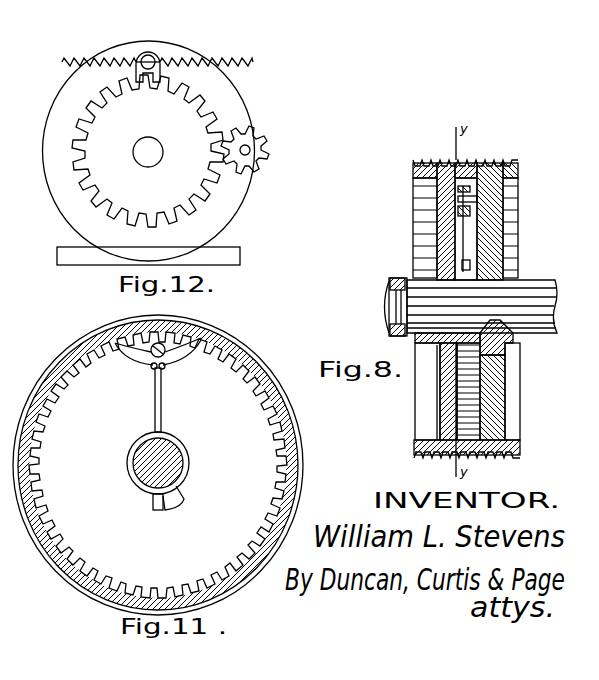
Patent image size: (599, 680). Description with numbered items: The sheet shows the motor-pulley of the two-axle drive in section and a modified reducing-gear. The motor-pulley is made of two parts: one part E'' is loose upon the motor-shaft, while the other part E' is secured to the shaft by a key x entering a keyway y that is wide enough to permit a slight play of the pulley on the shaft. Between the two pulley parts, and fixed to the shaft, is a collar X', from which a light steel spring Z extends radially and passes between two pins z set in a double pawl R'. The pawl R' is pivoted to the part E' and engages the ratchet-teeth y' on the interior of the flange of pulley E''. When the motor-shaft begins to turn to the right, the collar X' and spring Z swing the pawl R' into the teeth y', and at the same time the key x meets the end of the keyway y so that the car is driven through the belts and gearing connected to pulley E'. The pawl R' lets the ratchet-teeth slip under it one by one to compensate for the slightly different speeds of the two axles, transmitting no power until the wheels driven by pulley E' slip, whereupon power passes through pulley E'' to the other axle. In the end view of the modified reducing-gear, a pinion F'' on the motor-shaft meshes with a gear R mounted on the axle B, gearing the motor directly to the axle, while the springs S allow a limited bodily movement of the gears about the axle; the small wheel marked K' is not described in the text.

In FIG. 12, the springs S is at (157, 60).
In FIG. 12, the gear R is at (148, 151).
In FIG. 12, the axle B is at (148, 152).
In FIG. 12, the pinion gear / key K' is at (260, 151).
In FIG. 8, the pinion gear / key K' is at (477, 307).
In FIG. 12, the pinion F'' is at (271, 142).
In FIG. 11, the motor-pulley part E' is at (173, 465).
In FIG. 8, the motor-pulley part E' is at (525, 220).
In FIG. 8, the motor-pulley part E'' is at (410, 220).
In FIG. 11, the ratchet-teeth y' is at (158, 465).
In FIG. 11, the collar X' is at (178, 463).
In FIG. 8, the collar X' is at (447, 391).
In FIG. 11, the spring Z is at (162, 399).
In FIG. 11, the double pawl R' is at (160, 354).
In FIG. 11, the pins z is at (151, 368).
In FIG. 11, the keyway y is at (187, 499).
In FIG. 11, the key x is at (153, 509).